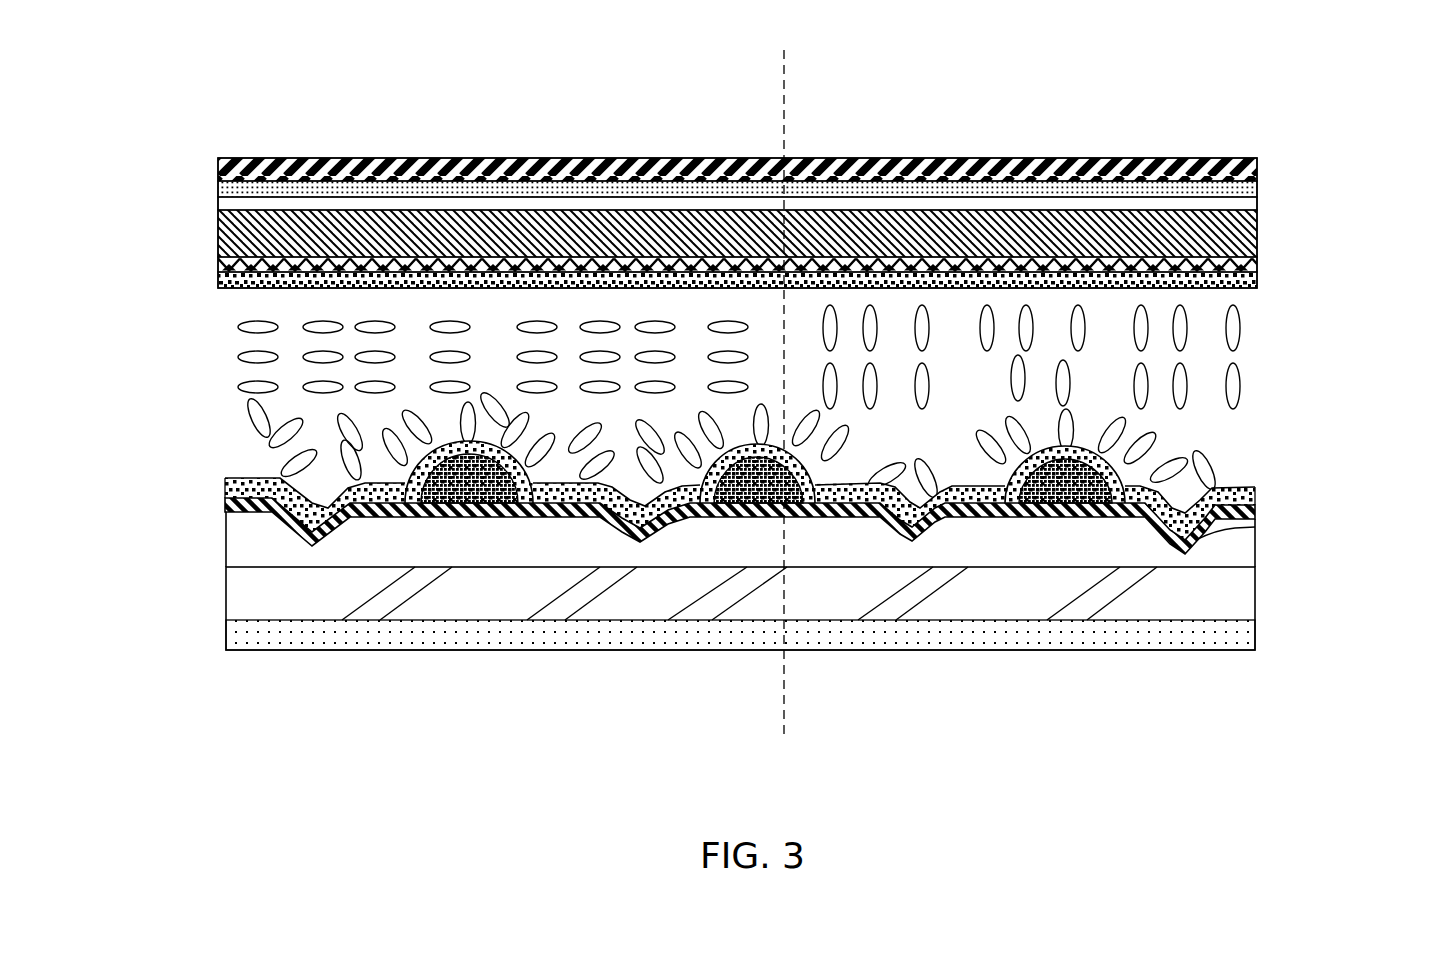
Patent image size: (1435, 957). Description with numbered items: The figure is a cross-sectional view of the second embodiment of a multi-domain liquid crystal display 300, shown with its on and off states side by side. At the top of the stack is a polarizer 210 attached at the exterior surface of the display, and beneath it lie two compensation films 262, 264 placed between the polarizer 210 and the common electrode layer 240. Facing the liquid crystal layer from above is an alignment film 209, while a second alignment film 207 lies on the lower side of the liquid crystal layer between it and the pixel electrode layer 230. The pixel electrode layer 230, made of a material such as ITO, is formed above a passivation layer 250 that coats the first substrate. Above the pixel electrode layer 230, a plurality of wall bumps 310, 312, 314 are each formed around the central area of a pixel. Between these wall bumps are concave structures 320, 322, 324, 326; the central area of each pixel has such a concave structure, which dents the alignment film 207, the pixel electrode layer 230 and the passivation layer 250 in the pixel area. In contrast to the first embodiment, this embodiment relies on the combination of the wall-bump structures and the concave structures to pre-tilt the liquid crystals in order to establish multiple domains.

The liquid crystal display 300 is at (313, 30).
The polarizer 210 is at (1257, 170).
The compensation film 262 is at (1257, 184).
The compensation film 264 is at (1257, 203).
The common electrode layer 240 is at (1257, 262).
The alignment film 209 is at (1257, 281).
The alignment film 207 is at (1253, 476).
The pixel electrode layer 230 is at (1257, 504).
The concave structure 326 is at (1257, 526).
The passivation layer 250 is at (1257, 560).
The concave structure 320 is at (300, 530).
The wall bump 310 is at (378, 519).
The concave structure 322 is at (602, 548).
The wall bump 312 is at (757, 517).
The concave structure 324 is at (885, 537).
The wall bump 314 is at (1010, 557).